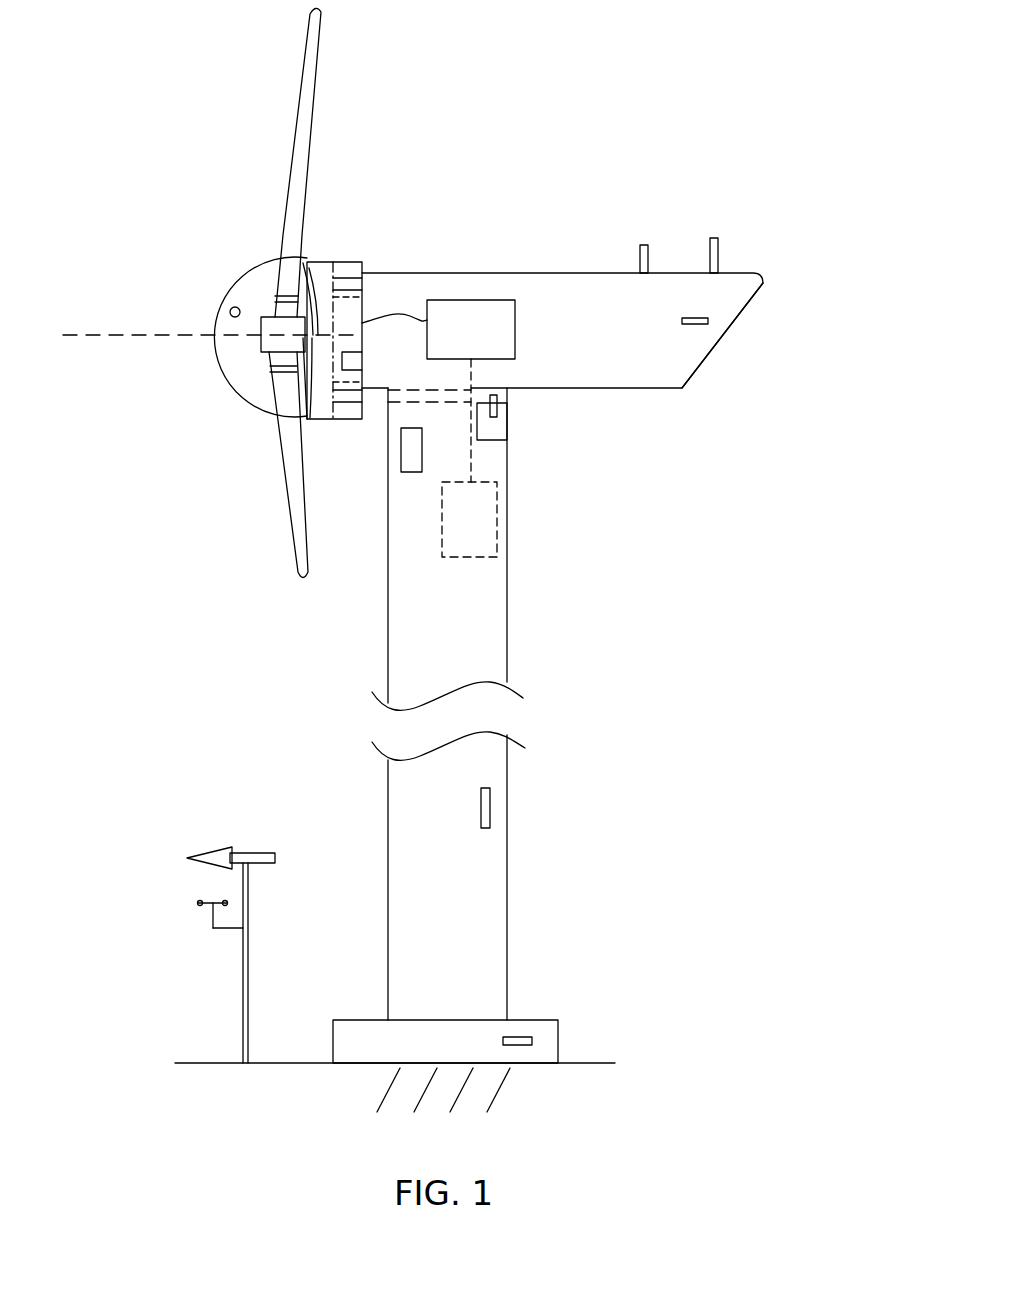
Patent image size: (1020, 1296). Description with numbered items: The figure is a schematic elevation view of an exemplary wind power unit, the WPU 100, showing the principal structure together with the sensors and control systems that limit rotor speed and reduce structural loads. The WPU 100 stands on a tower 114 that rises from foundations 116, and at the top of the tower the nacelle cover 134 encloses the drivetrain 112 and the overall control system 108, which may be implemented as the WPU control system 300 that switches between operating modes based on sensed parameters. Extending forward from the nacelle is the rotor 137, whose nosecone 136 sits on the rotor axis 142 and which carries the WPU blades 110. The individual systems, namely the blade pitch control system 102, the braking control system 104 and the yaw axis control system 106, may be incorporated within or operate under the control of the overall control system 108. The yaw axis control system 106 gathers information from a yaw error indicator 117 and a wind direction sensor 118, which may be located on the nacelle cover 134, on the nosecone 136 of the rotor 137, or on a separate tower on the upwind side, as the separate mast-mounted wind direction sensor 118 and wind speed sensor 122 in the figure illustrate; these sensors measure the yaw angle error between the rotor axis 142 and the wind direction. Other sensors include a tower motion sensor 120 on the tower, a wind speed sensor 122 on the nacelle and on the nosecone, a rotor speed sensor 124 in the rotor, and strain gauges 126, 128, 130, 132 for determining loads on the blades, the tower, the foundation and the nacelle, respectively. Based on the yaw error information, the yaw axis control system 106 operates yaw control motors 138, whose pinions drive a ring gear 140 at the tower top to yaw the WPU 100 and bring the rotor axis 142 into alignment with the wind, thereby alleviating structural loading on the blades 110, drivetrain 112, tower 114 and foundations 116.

The WPU 100 is at (150, 718).
The blade pitch control system 102 is at (234, 292).
The braking control system 104 is at (549, 320).
The yaw axis control system 106 is at (497, 513).
The overall control system 108 is at (483, 357).
The WPU control system 300 is at (472, 300).
The WPU blades 110 is at (287, 193).
The drivetrain 112 is at (258, 350).
The tower 114 is at (388, 613).
The foundations 116 is at (517, 1020).
The yaw error indicator 117 is at (714, 238).
The wind direction sensor 118 is at (247, 866).
The tower motion sensor 120 is at (401, 450).
The wind speed sensor 122 is at (230, 312).
The rotor speed sensor 124 is at (363, 363).
The strain gauge 126 is at (278, 280).
The strain gauge 128 is at (490, 808).
The strain gauge 130 is at (532, 1041).
The strain gauge 132 is at (708, 321).
The nacelle cover 134 is at (700, 378).
The nosecone 136 is at (257, 403).
The rotor 137 is at (348, 270).
The yaw control motors 138 is at (507, 428).
The ring gear 140 is at (500, 398).
The WPU rotor axis 142 is at (90, 337).